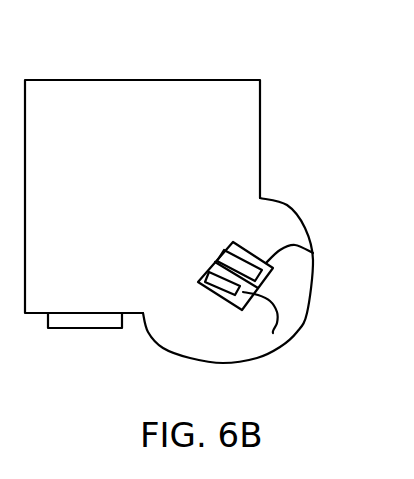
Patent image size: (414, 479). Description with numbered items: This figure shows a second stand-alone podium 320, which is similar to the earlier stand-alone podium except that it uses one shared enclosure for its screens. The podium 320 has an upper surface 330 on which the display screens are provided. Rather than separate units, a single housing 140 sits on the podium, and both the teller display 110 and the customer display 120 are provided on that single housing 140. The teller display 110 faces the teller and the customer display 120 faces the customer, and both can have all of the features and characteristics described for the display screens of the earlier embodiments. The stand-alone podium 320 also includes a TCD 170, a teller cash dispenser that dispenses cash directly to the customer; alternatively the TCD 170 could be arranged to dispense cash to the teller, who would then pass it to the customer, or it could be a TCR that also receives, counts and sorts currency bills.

The second stand-alone podium 320 is at (84, 80).
The upper surface 330 is at (263, 233).
The teller display 110 is at (316, 263).
The customer display 120 is at (207, 297).
The single housing 140 is at (273, 333).
The TCD 170 is at (50, 328).